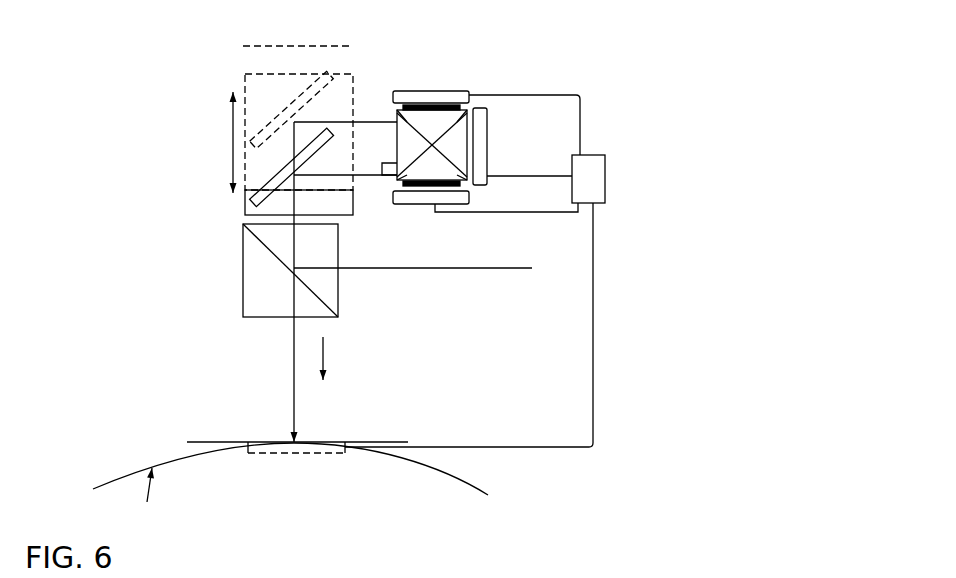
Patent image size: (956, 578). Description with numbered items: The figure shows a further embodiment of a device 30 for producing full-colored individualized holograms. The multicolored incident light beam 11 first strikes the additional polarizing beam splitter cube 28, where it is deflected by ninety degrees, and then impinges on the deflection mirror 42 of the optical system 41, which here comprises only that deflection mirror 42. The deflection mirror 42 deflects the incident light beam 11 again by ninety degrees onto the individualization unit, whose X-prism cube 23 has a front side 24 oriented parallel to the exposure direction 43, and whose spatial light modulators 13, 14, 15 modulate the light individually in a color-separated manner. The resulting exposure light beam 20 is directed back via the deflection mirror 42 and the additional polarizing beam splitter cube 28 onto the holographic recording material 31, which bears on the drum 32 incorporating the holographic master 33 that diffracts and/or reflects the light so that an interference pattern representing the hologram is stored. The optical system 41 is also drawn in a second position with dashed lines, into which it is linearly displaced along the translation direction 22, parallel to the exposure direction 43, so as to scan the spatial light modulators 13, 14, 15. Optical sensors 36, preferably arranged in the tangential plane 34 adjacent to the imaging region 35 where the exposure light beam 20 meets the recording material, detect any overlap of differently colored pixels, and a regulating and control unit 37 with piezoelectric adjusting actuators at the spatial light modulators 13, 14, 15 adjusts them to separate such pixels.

The incident light beam 11 is at (487, 268).
The spatial light modulator 13 is at (435, 96).
The spatial light modulator 14 is at (423, 198).
The spatial light modulator 15 is at (482, 130).
The exposure light beam 20 is at (294, 367).
The translation direction 22 is at (233, 145).
The X-prism cube 23 is at (402, 127).
The front side 24 is at (382, 177).
The additional polarizing beam splitter cube 28 is at (243, 295).
The device 30 is at (165, 52).
The holographic recording material 31 is at (130, 472).
The drum 32 is at (453, 490).
The holographic master 33 is at (150, 502).
The tangential plane 34 is at (375, 440).
The measuring point 35 is at (296, 441).
The optical sensors 36 is at (328, 453).
The regulating and control unit 37 is at (600, 167).
The optical system 41 is at (253, 46).
The deflection mirror 42 is at (308, 86).
The exposure direction 43 is at (323, 355).